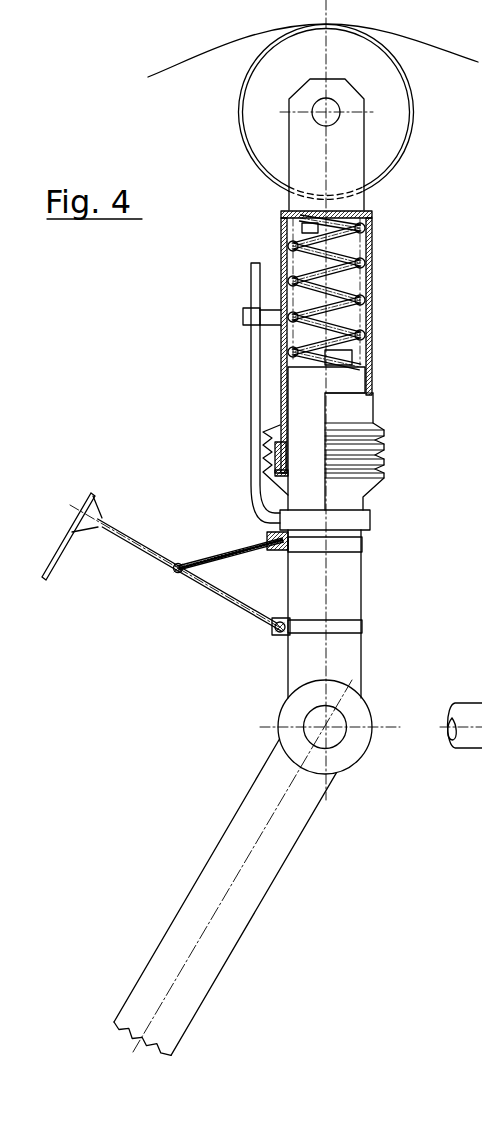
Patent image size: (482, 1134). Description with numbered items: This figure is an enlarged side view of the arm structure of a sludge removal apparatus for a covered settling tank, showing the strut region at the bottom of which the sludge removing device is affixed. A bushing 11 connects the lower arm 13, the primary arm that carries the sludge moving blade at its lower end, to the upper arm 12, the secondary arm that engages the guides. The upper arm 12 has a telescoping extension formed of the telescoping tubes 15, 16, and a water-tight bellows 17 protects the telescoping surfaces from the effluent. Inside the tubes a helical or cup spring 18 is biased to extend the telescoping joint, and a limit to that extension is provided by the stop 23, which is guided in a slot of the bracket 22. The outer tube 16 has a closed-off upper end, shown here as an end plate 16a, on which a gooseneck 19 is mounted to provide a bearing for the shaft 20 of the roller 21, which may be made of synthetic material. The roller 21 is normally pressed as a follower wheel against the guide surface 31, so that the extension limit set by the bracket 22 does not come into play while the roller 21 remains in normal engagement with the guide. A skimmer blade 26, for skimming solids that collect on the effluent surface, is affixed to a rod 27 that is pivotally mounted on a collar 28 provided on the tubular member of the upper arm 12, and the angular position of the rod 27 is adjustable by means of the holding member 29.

The bushing 11 is at (350, 752).
The upper arm 12 is at (385, 395).
The lower arm 13 is at (246, 928).
The telescoping tube 15 is at (348, 587).
The outer tube 16 is at (373, 300).
The housing end plate 16a is at (367, 203).
The water-tight bellows 17 is at (365, 487).
The helical or cup spring 18 is at (347, 288).
The gooseneck 19 is at (348, 173).
The shaft 20 is at (336, 107).
The roller 21 is at (395, 87).
The bracket 22 is at (251, 362).
The stop 23 is at (243, 313).
The skimmer blade 26 is at (66, 543).
The rod 27 is at (240, 606).
The collar 28 is at (348, 628).
The holding member 29 is at (232, 552).
The guide surface 31 is at (199, 58).